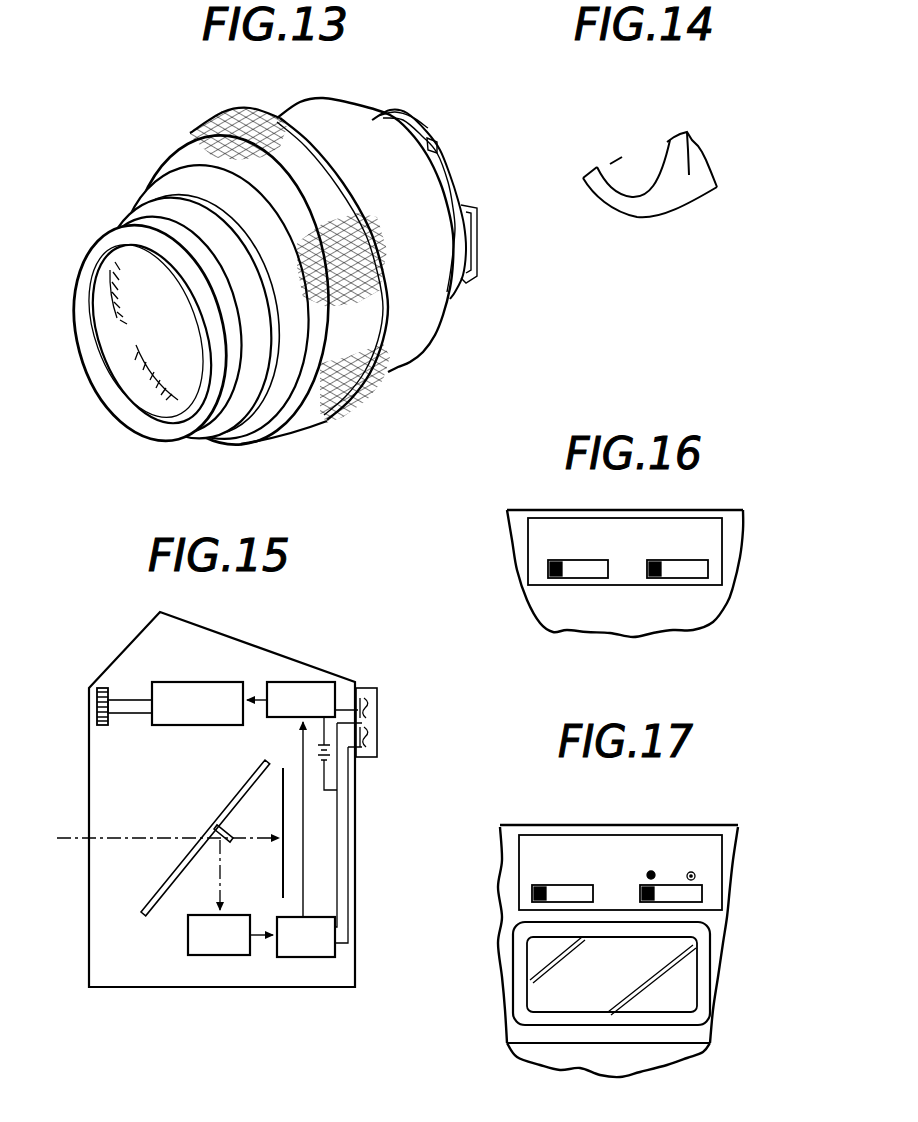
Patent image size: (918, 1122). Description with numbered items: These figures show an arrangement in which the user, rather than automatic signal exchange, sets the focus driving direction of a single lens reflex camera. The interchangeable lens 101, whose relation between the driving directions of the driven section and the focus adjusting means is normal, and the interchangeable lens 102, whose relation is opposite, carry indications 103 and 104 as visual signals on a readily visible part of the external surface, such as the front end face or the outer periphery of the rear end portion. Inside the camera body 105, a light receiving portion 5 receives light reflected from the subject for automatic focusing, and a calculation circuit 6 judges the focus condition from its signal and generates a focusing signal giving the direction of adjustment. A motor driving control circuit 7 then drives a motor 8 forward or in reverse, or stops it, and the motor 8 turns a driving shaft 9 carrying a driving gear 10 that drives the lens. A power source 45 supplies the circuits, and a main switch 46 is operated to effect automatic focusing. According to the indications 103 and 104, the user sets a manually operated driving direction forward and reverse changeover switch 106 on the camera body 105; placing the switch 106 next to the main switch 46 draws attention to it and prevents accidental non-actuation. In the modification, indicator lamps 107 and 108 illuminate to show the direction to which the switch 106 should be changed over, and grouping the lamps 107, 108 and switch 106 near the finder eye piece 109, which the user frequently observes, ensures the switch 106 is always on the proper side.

In FIG. 15, the light receiving portion 5 is at (211, 948).
In FIG. 15, the calculation circuit 6 is at (298, 950).
In FIG. 15, the motor driving control circuit 7 is at (293, 713).
In FIG. 15, the motor 8 is at (189, 717).
In FIG. 15, the driving shaft 9 is at (131, 705).
In FIG. 15, the driving gear 10 is at (108, 722).
In FIG. 15, the power source 45 is at (330, 765).
In FIG. 15, the main switch 46 is at (377, 710).
In FIG. 16, the main switch 46 is at (578, 573).
In FIG. 17, the main switch 46 is at (560, 893).
In FIG. 13, the interchangeable lens 101 is at (97, 223).
In FIG. 14, the interchangeable lens 102 is at (590, 168).
In FIG. 13, the indication 103 is at (223, 372).
In FIG. 14, the indication 104 is at (688, 172).
In FIG. 15, the camera body 105 is at (89, 795).
In FIG. 16, the camera body 105 is at (730, 595).
In FIG. 17, the camera body 105 is at (727, 985).
In FIG. 15, the driving direction forward and reverse changeover switch 106 is at (377, 740).
In FIG. 16, the driving direction forward and reverse changeover switch 106 is at (672, 573).
In FIG. 17, the driving direction forward and reverse changeover switch 106 is at (667, 900).
In FIG. 17, the indicator lamp 107 is at (657, 875).
In FIG. 17, the indicator lamp 108 is at (695, 875).
In FIG. 17, the finder eye piece 109 is at (517, 967).